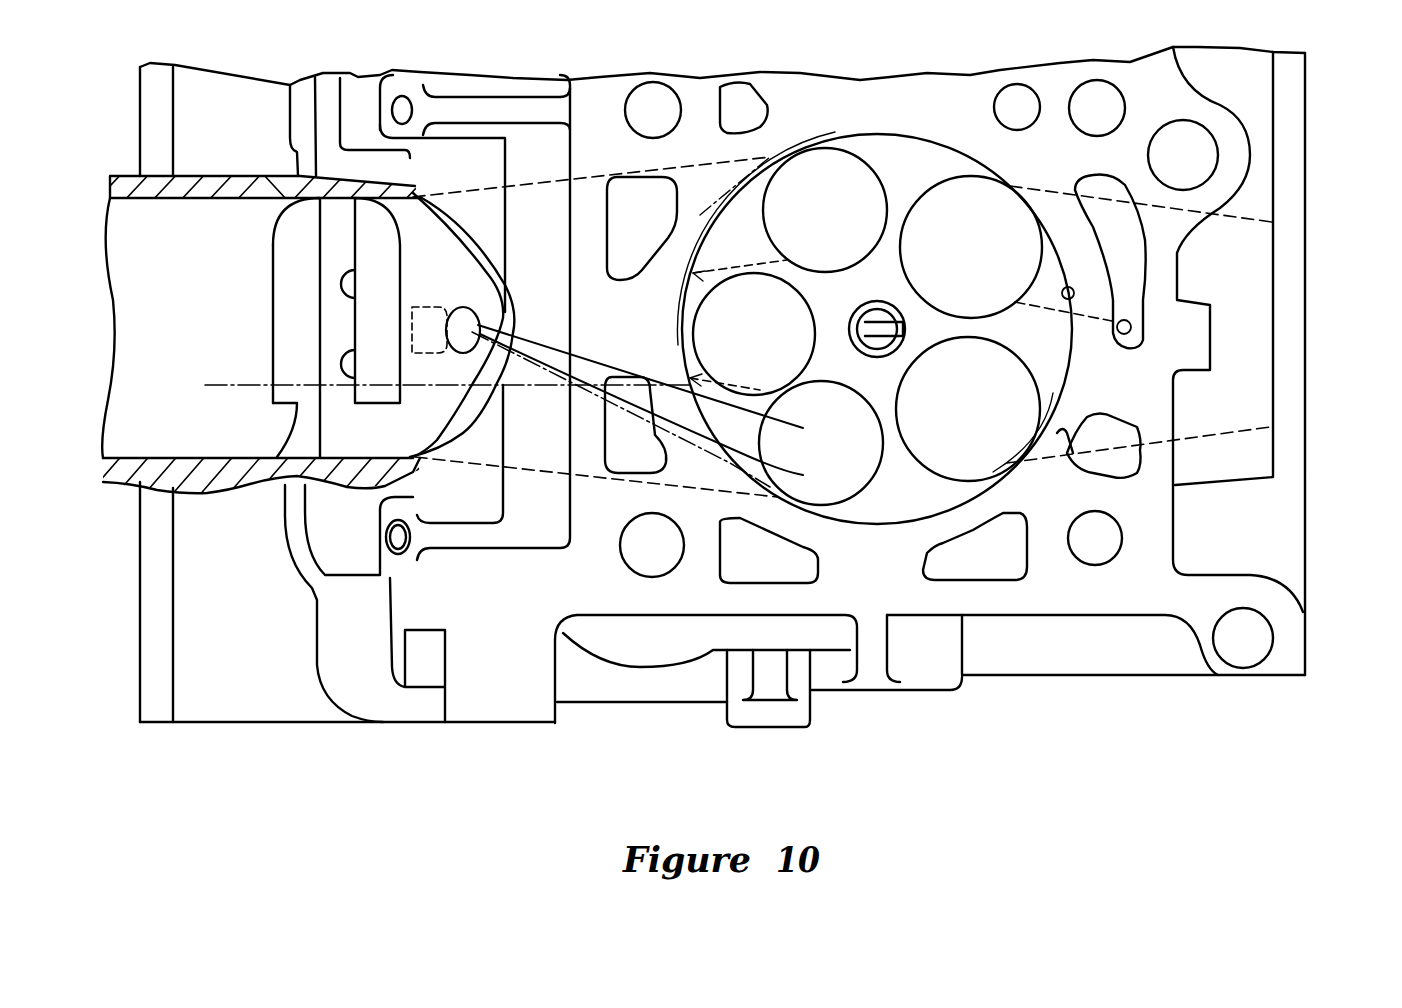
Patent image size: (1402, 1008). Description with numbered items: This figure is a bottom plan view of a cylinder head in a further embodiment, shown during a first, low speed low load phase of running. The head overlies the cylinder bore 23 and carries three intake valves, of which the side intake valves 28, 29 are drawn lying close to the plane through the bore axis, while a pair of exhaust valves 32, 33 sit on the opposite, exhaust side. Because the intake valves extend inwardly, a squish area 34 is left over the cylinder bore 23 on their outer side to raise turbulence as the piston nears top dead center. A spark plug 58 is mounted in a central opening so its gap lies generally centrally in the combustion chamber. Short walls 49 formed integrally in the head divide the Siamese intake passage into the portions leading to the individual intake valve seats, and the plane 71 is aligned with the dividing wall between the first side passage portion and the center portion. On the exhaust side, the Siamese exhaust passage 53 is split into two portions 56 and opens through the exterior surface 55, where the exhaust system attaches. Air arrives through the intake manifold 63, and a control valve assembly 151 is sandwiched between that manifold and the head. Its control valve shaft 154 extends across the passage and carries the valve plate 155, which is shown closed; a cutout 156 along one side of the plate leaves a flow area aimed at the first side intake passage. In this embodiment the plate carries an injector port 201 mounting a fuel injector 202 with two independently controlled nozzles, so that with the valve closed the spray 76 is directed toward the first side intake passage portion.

The cylinder bore 23 is at (1075, 287).
The side intake valve 28 is at (832, 492).
The side intake valve 29 is at (827, 165).
The exhaust valve 32 is at (987, 463).
The exhaust valve 33 is at (962, 188).
The squish area 34 is at (690, 298).
The wall 49 is at (767, 240).
The exhaust passage 53 is at (1237, 428).
The exterior surface 55 is at (1307, 531).
The exhaust passage portion 56 is at (1090, 203).
The spark plug 58 is at (884, 308).
The intake manifold 63 is at (120, 500).
The plane 71 is at (237, 385).
The spray pattern path 76 is at (773, 453).
The control valve assembly 151 is at (268, 152).
The control valve shaft 154 is at (333, 223).
The valve plate 155 is at (273, 292).
The cutout 156 is at (280, 404).
The injector port 201 is at (463, 307).
The fuel injector 202 is at (413, 310).